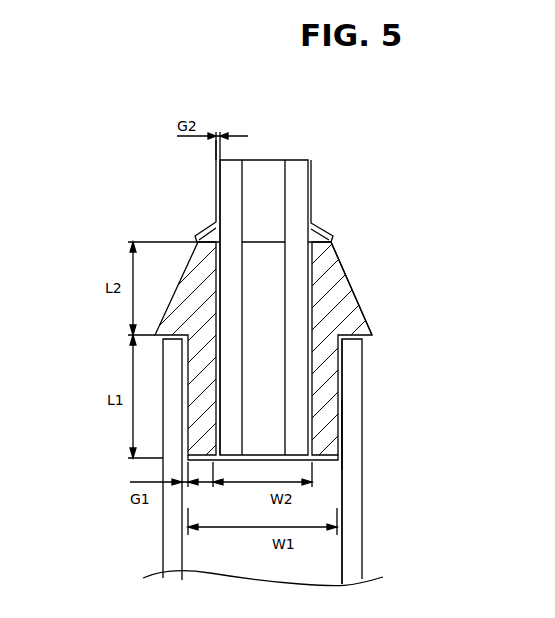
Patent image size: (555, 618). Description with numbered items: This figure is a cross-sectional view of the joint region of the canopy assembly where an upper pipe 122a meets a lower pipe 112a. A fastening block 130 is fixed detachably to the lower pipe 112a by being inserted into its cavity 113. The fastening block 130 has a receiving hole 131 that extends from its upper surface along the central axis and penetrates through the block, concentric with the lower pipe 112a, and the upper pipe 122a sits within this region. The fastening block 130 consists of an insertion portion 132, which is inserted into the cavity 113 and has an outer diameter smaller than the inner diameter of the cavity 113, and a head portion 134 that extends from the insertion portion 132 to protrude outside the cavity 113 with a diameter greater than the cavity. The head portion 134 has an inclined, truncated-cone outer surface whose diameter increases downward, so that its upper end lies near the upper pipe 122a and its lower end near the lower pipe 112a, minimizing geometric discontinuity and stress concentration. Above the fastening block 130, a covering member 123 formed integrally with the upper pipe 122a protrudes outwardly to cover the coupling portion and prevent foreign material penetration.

The upper pipe 122a is at (216, 202).
The covering member 123 is at (328, 238).
The fastening block 130 is at (277, 350).
The receiving hole 131 is at (312, 257).
The insertion portion 132 is at (332, 365).
The head portion 134 is at (335, 308).
The cavity 113 is at (338, 481).
The lower pipe 112a is at (360, 526).